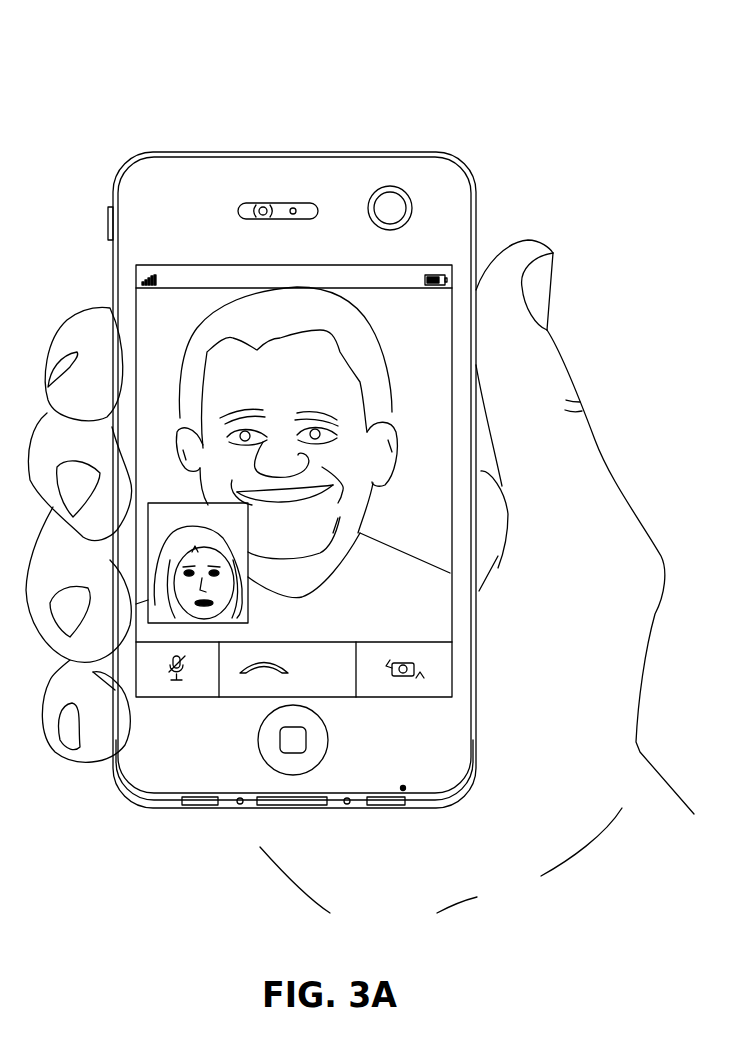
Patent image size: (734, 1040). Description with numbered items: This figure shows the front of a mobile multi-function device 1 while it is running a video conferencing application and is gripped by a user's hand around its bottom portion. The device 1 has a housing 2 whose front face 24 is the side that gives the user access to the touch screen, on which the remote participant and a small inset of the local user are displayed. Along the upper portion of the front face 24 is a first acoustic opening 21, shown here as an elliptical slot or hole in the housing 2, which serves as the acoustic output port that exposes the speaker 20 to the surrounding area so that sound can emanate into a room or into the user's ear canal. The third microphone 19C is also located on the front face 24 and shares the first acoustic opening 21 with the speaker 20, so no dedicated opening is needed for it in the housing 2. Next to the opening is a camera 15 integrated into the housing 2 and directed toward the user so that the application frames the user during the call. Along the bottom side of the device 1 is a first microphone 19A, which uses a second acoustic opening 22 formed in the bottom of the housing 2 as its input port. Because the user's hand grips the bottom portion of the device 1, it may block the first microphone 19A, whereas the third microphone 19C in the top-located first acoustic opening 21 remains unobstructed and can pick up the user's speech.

The mobile multi-function device 1 is at (552, 114).
The housing 2 is at (437, 152).
The camera 15 is at (385, 202).
The first microphone 19A is at (200, 803).
The third microphone 19C is at (293, 206).
The speaker 20 is at (257, 203).
The first acoustic opening 21 is at (238, 208).
The second acoustic opening 22 is at (223, 803).
The front face 24 is at (157, 167).